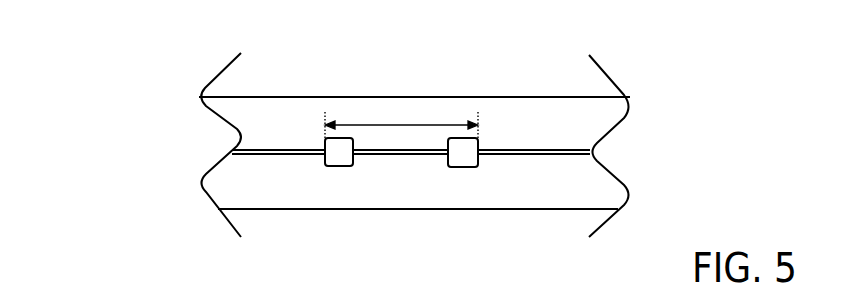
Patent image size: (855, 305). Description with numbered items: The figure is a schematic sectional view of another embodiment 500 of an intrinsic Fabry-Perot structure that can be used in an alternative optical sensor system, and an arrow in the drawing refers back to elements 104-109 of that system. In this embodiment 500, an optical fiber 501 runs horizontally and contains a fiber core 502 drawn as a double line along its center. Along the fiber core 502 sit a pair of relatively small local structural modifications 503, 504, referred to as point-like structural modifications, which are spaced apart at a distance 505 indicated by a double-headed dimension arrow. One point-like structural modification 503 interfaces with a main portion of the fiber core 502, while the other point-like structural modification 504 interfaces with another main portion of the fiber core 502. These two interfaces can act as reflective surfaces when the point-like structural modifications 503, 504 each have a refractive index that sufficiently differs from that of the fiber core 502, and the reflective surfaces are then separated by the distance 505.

The intrinsic Fabry-Perot structure embodiment 500 is at (112, 26).
The layers 104-109 is at (63, 50).
The optical fiber 501 is at (272, 108).
The fiber core 502 is at (287, 152).
The point-like structural modification 503 is at (337, 166).
The point-like structural modification 504 is at (467, 160).
The distance 505 is at (398, 122).